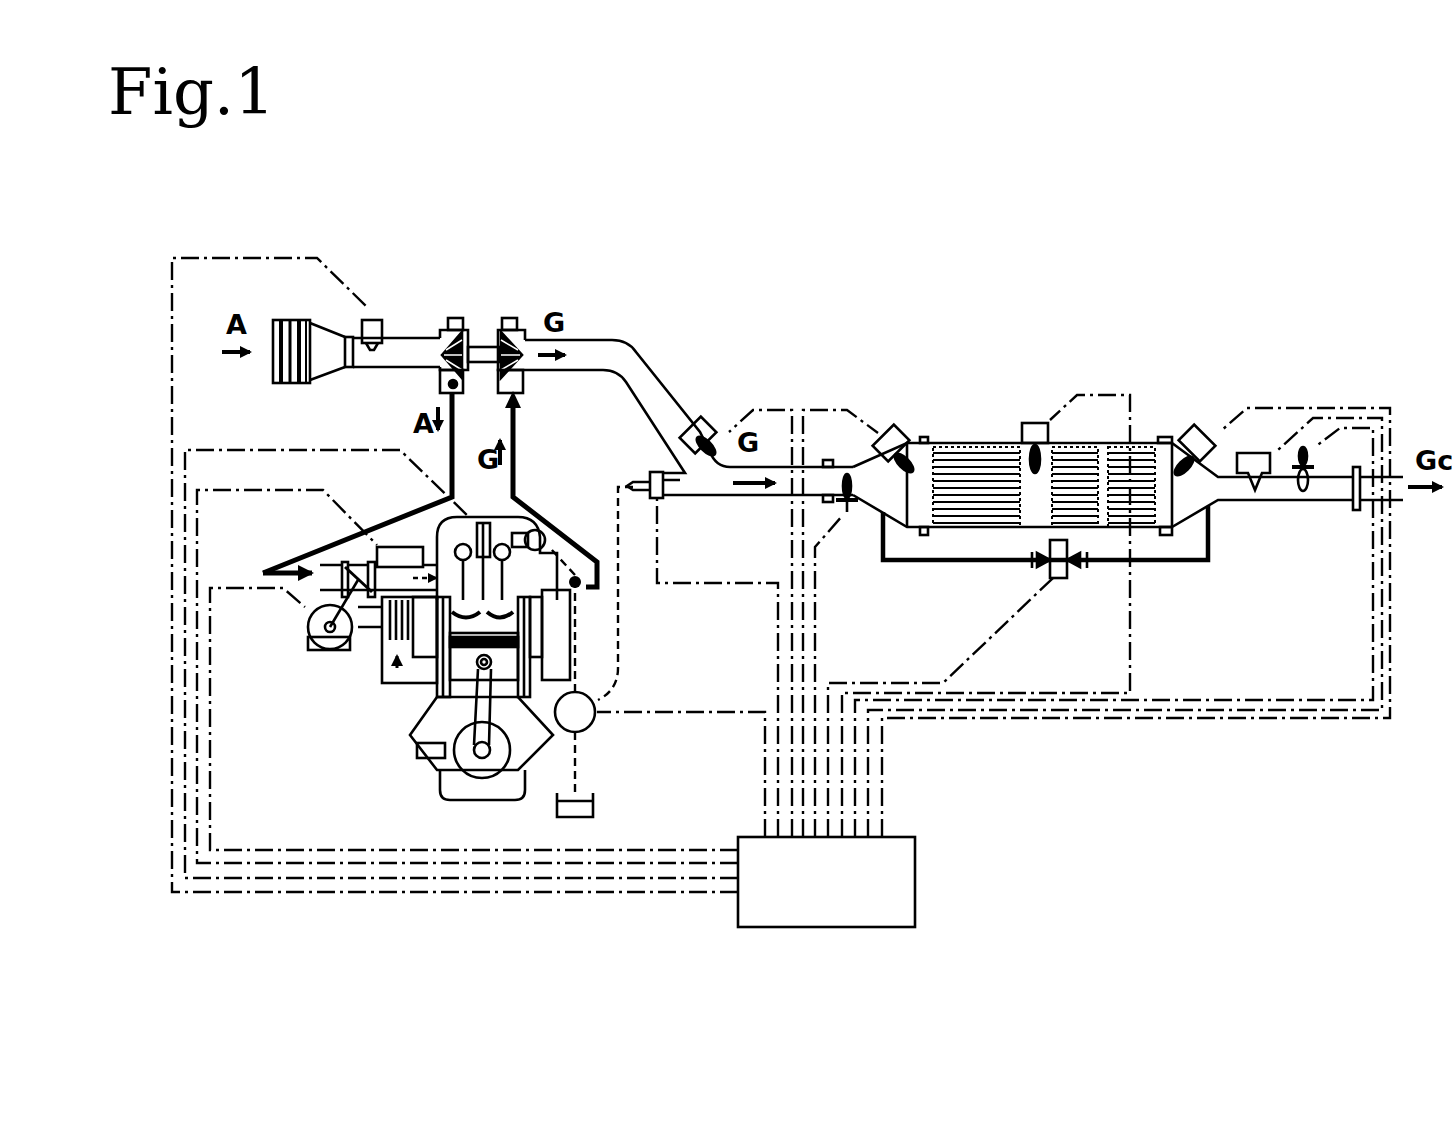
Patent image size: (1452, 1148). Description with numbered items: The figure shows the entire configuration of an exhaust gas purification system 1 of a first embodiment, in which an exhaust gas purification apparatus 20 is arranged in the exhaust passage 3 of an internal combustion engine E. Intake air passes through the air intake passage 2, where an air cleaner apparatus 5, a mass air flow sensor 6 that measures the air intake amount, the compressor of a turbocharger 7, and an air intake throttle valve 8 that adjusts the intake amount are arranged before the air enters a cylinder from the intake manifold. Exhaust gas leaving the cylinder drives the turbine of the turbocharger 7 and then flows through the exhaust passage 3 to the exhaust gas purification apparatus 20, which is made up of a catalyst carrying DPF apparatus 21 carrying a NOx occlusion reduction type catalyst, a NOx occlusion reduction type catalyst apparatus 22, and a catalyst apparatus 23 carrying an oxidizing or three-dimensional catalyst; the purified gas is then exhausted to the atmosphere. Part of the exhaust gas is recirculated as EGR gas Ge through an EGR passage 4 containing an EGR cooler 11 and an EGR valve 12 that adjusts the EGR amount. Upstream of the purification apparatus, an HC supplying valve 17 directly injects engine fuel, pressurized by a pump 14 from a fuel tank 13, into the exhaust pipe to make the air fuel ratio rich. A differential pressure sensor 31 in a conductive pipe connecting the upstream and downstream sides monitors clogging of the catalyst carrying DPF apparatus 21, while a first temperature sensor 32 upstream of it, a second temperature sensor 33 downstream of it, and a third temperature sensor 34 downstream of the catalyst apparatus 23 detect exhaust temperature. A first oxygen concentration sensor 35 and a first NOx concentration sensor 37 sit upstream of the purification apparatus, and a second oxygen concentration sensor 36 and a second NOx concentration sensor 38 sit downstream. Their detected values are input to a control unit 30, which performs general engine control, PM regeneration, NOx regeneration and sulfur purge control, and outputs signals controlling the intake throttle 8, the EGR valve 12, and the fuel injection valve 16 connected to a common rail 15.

The exhaust gas purification system 1 is at (1016, 352).
The air intake passage 2 is at (436, 338).
The exhaust passage 3 is at (665, 390).
The EGR passage 4 is at (408, 689).
The air cleaner apparatus 5 is at (297, 322).
The mass air flow sensor 6 is at (376, 320).
The turbocharger 7 is at (488, 316).
The air intake throttle valve 8 is at (306, 628).
The EGR cooler 11 is at (378, 642).
The EGR valve 12 is at (406, 543).
The fuel tank 13 is at (595, 807).
The pump 14 is at (595, 697).
The common rail 15 is at (552, 526).
The fuel injection valve 16 is at (494, 514).
The HC supplying valve 17 is at (661, 500).
The exhaust gas purification apparatus 20 is at (1156, 443).
The catalyst carrying DPF apparatus 21 is at (971, 518).
The NOx occlusion reduction type catalyst apparatus 22 is at (1083, 515).
The catalyst apparatus 23 is at (1143, 518).
The control unit 30 is at (903, 892).
The differential pressure sensor 31 is at (1058, 580).
The first temperature sensor 32 is at (890, 430).
The second temperature sensor 33 is at (1043, 423).
The third temperature sensor 34 is at (1210, 430).
The first oxygen concentration sensor 35 is at (852, 512).
The second oxygen concentration sensor 36 is at (1306, 447).
The first NOx concentration sensor 37 is at (716, 428).
The second NOx concentration sensor 38 is at (1263, 453).
The engine E is at (404, 630).
The EGR gas Ge is at (381, 668).